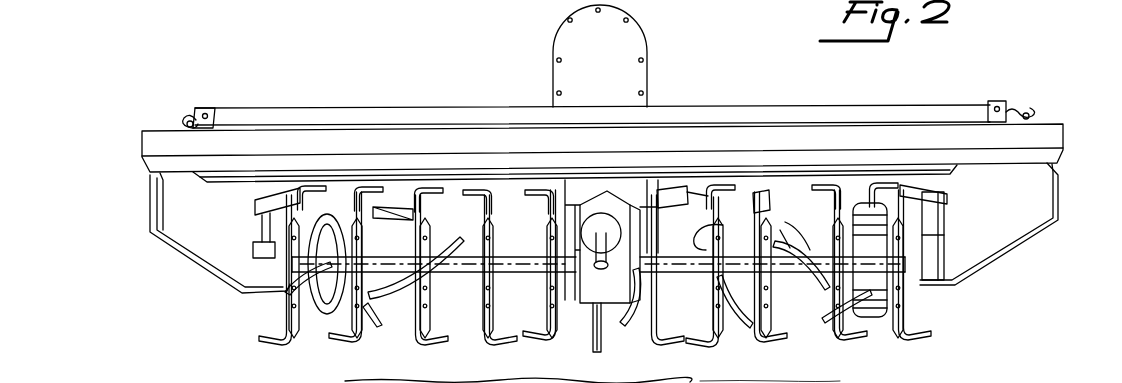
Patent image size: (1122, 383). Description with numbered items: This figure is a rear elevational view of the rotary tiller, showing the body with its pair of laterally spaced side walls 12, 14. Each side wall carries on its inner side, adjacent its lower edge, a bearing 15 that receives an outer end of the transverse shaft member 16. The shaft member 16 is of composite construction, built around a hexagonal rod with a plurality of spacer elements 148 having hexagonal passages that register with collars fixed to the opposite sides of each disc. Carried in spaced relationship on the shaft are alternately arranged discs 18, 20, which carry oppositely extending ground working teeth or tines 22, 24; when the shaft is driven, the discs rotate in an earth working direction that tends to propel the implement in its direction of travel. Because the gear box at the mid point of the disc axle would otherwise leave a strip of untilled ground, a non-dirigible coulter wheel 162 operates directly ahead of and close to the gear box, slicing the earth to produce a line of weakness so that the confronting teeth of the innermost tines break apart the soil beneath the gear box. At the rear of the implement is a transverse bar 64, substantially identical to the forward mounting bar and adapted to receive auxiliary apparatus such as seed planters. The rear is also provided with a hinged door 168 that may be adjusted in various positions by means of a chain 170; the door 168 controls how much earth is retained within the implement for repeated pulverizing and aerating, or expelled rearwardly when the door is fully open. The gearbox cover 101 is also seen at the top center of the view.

The gearbox cover 101 is at (641, 72).
The transverse bar 64 is at (942, 93).
The chain 170 is at (1027, 112).
The hinged door 168 is at (1058, 137).
The side wall 12 is at (160, 200).
The side wall 14 is at (1043, 198).
The bearing 15 is at (262, 262).
The spacer element 148 is at (450, 268).
The disc 18 is at (483, 288).
The disc 20 is at (547, 297).
The tine 24 is at (752, 322).
The tine 22 is at (700, 343).
The transverse shaft member 16 is at (798, 250).
The coulter wheel 162 is at (595, 345).